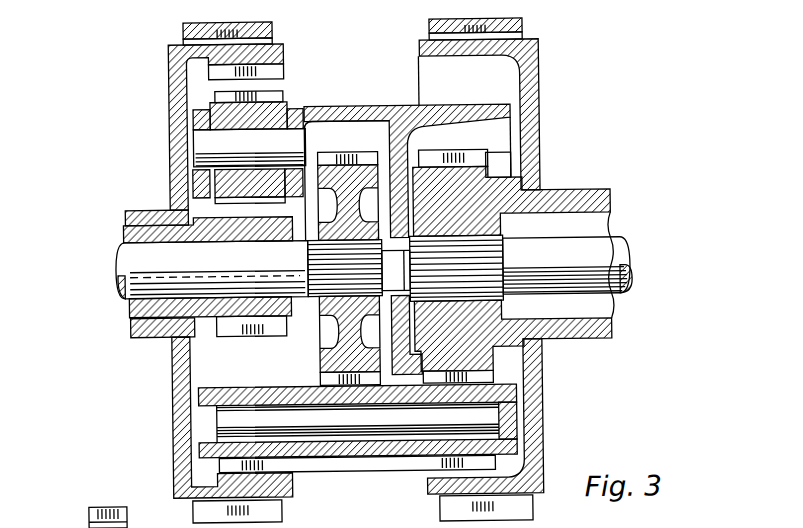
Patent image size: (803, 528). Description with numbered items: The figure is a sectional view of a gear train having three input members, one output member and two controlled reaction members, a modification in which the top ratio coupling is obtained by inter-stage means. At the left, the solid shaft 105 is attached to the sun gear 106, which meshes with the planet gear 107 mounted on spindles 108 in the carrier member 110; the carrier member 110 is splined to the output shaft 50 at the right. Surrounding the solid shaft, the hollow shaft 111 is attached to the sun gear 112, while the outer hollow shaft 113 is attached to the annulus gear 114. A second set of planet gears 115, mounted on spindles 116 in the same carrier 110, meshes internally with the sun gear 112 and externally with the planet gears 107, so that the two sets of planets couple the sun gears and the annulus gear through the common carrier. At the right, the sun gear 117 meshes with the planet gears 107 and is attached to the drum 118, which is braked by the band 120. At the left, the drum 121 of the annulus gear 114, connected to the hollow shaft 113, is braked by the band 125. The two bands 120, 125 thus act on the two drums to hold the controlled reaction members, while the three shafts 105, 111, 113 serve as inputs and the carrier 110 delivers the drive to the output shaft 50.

The output shaft 50 is at (613, 256).
The solid shaft 105 is at (133, 268).
The sun gear 106 is at (362, 157).
The planet gear 107 is at (322, 463).
The spindles 108 is at (363, 457).
The carrier member 110 is at (444, 118).
The hollow shaft 111 is at (126, 228).
The sun gear 112 is at (262, 338).
The hollow shaft 113 is at (141, 210).
The annulus gear 114 is at (278, 53).
The planet gears 115 is at (274, 112).
The spindles 116 is at (205, 148).
The sun gear 117 is at (458, 170).
The drum 118 is at (532, 104).
The band 120 is at (526, 31).
The drum 121 is at (187, 114).
The band 125 is at (186, 32).